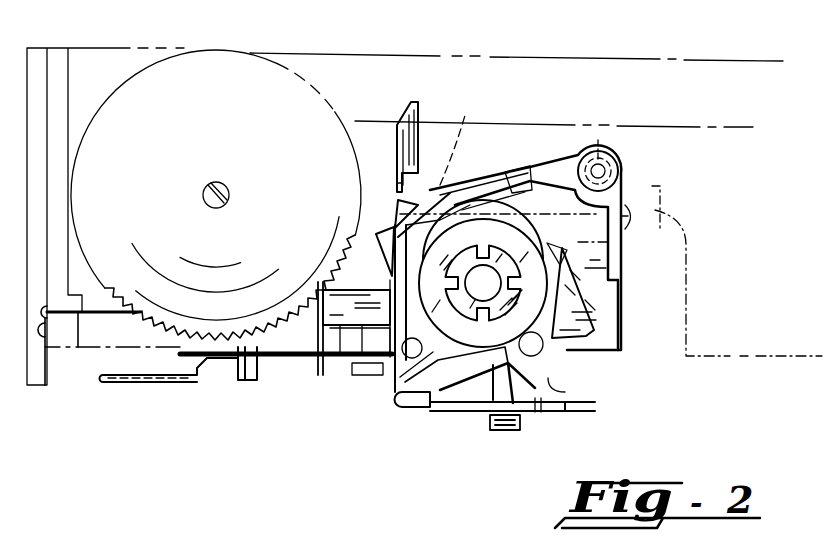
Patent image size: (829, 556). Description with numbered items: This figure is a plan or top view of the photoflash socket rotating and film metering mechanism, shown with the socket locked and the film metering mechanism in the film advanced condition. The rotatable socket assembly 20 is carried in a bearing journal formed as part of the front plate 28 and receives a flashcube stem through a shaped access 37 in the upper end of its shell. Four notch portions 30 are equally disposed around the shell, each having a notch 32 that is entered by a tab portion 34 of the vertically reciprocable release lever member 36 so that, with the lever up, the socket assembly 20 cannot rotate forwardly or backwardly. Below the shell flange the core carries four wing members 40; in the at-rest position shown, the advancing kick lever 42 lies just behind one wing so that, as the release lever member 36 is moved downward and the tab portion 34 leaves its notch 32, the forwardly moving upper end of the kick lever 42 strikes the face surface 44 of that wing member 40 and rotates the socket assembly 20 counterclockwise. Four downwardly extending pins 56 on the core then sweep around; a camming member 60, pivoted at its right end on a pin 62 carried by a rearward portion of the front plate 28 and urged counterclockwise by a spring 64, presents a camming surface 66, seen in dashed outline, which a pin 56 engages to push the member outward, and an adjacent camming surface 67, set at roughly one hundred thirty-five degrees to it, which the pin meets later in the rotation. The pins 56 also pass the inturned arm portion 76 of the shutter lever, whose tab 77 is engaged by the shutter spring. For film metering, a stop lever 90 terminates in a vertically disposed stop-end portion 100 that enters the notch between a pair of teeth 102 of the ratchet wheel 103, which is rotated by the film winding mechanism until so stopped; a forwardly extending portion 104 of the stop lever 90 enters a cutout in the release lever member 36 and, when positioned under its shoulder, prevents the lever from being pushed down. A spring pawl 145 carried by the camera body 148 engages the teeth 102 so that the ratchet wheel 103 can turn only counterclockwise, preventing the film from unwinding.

The socket assembly 20 is at (681, 350).
The front plate 28 is at (632, 193).
The notch portions 30 is at (584, 388).
The notch 32 is at (540, 412).
The tab portion 34 is at (372, 378).
The release lever member 36 is at (193, 381).
The shaped access 37 is at (494, 255).
The wing members 40 is at (604, 308).
The advancing kick lever 42 is at (389, 250).
The face surface 44 is at (387, 227).
The downwardly extending pins 56 is at (444, 126).
The camming member 60 is at (562, 158).
The pin 62 is at (600, 153).
The spring 64 is at (610, 247).
The camming surface 66 is at (538, 190).
The adjacent camming surface 67 is at (447, 208).
The inturned arm portion 76 is at (480, 390).
The tab 77 is at (490, 430).
The stop lever 90 is at (630, 219).
The stop-end portion 100 is at (320, 306).
The teeth 102 is at (339, 234).
The ratchet wheel 103 is at (270, 66).
The forwardly extending portion 104 is at (290, 382).
The spring pawl 145 is at (97, 314).
The camera body 148 is at (35, 393).